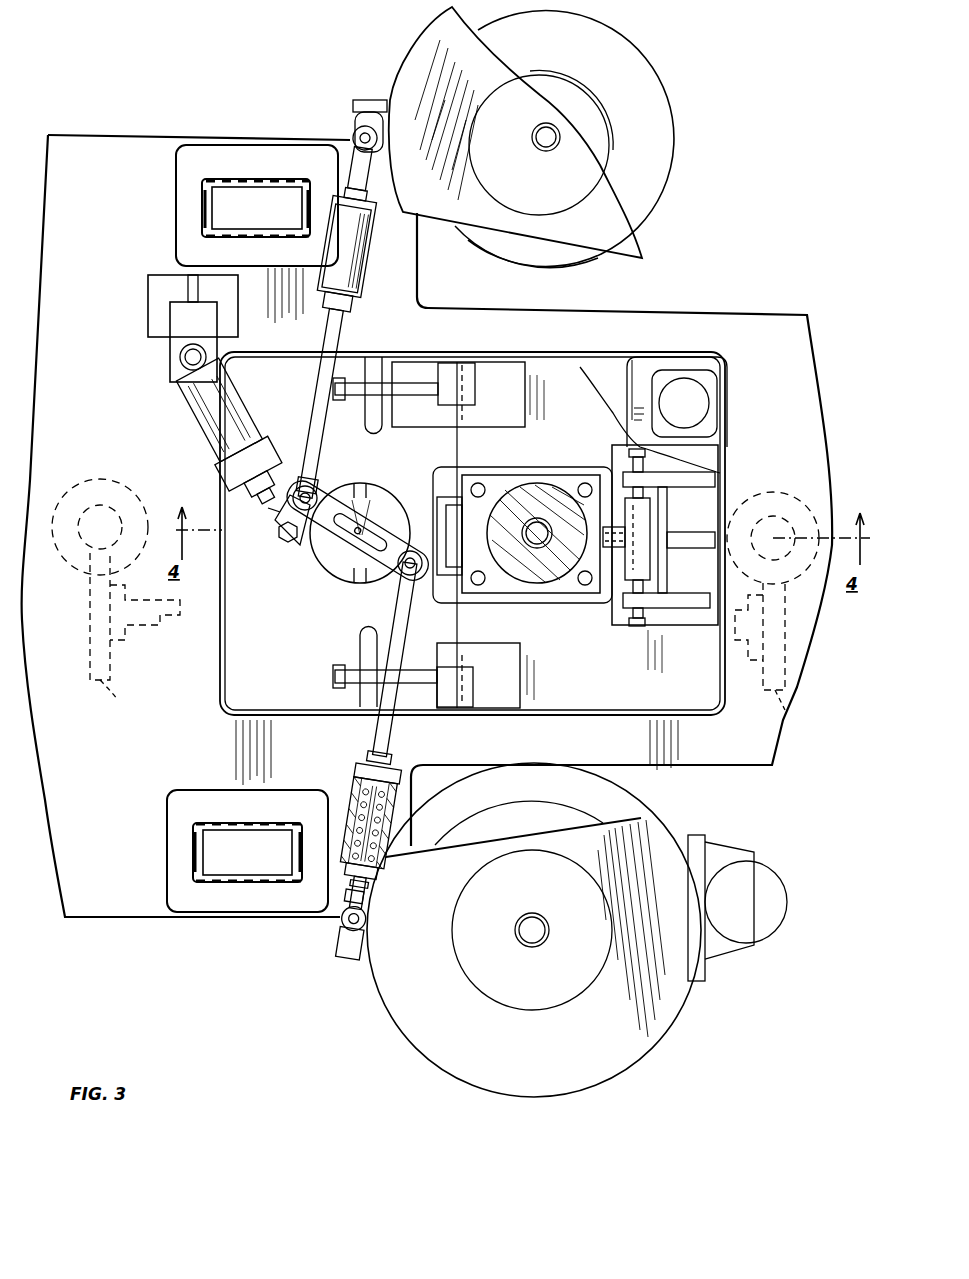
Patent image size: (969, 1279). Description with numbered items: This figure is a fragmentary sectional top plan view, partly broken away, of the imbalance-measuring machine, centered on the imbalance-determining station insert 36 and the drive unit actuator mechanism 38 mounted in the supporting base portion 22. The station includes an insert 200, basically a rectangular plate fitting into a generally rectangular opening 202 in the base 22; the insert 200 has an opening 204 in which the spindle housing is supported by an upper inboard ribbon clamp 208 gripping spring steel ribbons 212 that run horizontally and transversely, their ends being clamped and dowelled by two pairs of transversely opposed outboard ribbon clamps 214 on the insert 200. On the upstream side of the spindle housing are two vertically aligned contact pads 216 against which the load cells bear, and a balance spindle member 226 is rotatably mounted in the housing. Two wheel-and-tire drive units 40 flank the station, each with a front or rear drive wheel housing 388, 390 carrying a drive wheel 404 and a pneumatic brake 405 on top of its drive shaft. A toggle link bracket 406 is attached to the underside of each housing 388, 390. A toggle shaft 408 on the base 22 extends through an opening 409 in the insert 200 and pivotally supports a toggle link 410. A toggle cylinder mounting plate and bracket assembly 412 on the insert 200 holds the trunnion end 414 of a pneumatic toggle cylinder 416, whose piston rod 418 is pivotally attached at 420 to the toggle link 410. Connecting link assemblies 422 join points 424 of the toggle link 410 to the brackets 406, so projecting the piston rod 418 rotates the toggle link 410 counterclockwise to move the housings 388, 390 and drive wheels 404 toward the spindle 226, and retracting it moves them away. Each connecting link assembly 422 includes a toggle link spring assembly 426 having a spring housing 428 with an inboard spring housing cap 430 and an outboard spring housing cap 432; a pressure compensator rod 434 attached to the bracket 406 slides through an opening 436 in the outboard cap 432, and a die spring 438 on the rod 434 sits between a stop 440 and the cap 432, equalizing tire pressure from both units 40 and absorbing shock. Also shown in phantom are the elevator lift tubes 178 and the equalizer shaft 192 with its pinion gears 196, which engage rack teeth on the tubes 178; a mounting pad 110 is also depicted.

The supporting base portion 22 is at (742, 330).
The imbalance-determining station insert 36 is at (707, 703).
The drive unit actuator mechanism 38 is at (339, 543).
The wheel-and-tire drive unit 40 is at (532, 137).
The mounting pad 110 is at (240, 182).
The elevator lift tube 178 is at (785, 475).
The equalizer shaft 192 is at (437, 647).
The pinion gear 196 is at (797, 742).
The insert 200 is at (632, 698).
The rectangular opening 202 is at (725, 372).
The opening 204 is at (504, 538).
The upper inboard ribbon clamp 208 is at (429, 517).
The spring steel ribbon 212 is at (458, 620).
The outboard ribbon clamp 214 is at (500, 379).
The contact pad 216 is at (618, 600).
The balance spindle member 226 is at (540, 545).
The front drive wheel housing 388 is at (630, 1052).
The rear drive wheel housing 390 is at (417, 80).
The drive wheel 404 is at (665, 115).
The pneumatic brake 405 is at (541, 142).
The toggle link bracket 406 is at (355, 105).
The toggle shaft 408 is at (342, 578).
The opening 409 is at (368, 557).
The toggle link 410 is at (312, 545).
The toggle cylinder mounting plate and bracket assembly 412 is at (150, 357).
The trunnion end 414 is at (172, 365).
The pneumatic toggle cylinder 416 is at (197, 450).
The piston rod 418 is at (275, 515).
The pivotal attachment point 420 is at (283, 538).
The connecting link assembly 422 is at (301, 399).
The connection point 424 is at (315, 490).
The toggle link spring assembly 426 is at (364, 306).
The spring housing 428 is at (399, 255).
The inboard spring housing cap 430 is at (421, 739).
The outboard spring housing cap 432 is at (416, 888).
The pressure compensator rod 434 is at (323, 147).
The opening 436 is at (415, 927).
The die spring 438 is at (432, 834).
The stop 440 is at (427, 767).